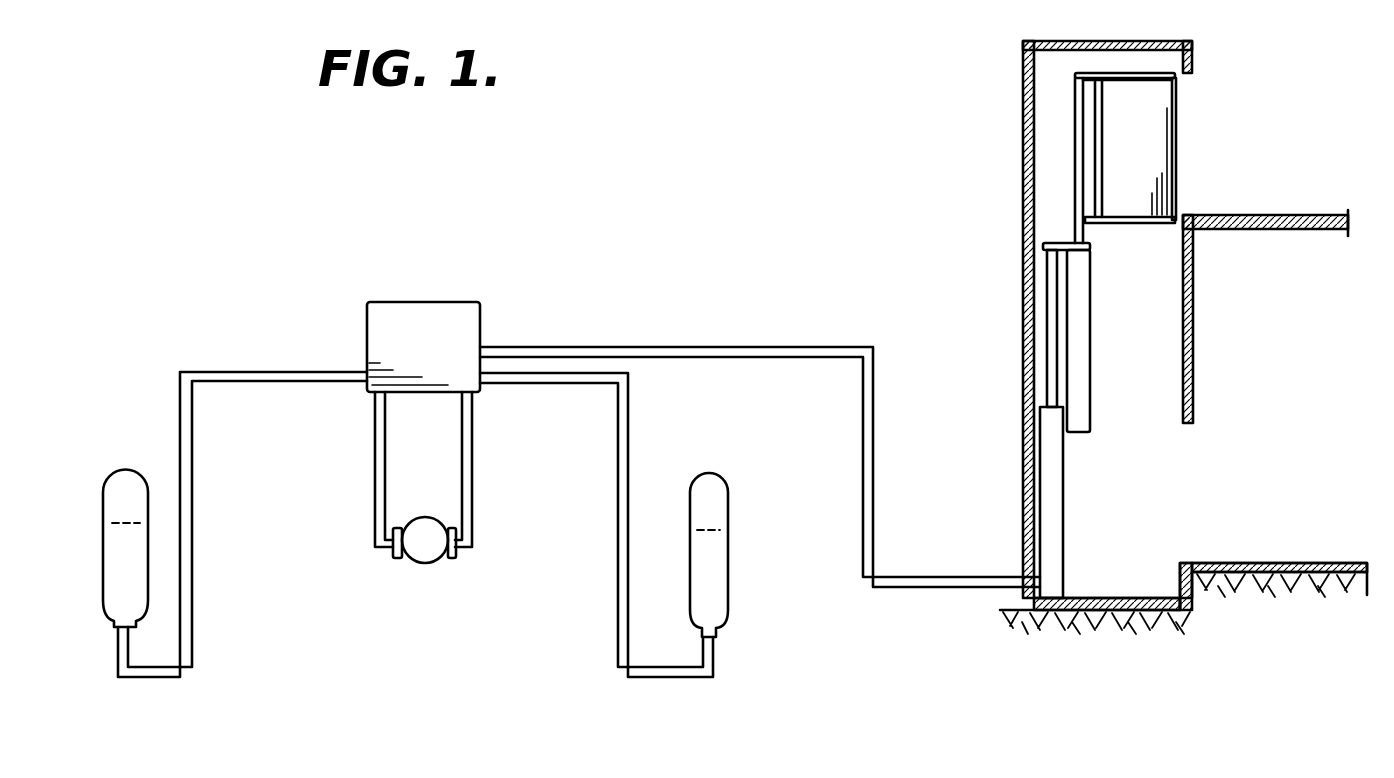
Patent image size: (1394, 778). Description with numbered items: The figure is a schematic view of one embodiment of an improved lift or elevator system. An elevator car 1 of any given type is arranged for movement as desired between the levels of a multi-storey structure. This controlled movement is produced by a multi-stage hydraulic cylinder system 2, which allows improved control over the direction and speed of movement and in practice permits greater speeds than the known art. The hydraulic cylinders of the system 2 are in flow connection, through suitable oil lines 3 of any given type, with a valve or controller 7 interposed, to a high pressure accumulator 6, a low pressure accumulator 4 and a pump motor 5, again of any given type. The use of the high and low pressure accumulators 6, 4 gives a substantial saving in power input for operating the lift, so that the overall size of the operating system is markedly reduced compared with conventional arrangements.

The elevator car 1 is at (1161, 165).
The multi-stage hydraulic cylinder system 2 is at (1040, 412).
The oil lines 3 is at (790, 348).
The low pressure accumulator 4 is at (715, 560).
The pump motor 5 is at (428, 552).
The high pressure accumulator 6 is at (133, 552).
The valve or controller 7 is at (415, 327).